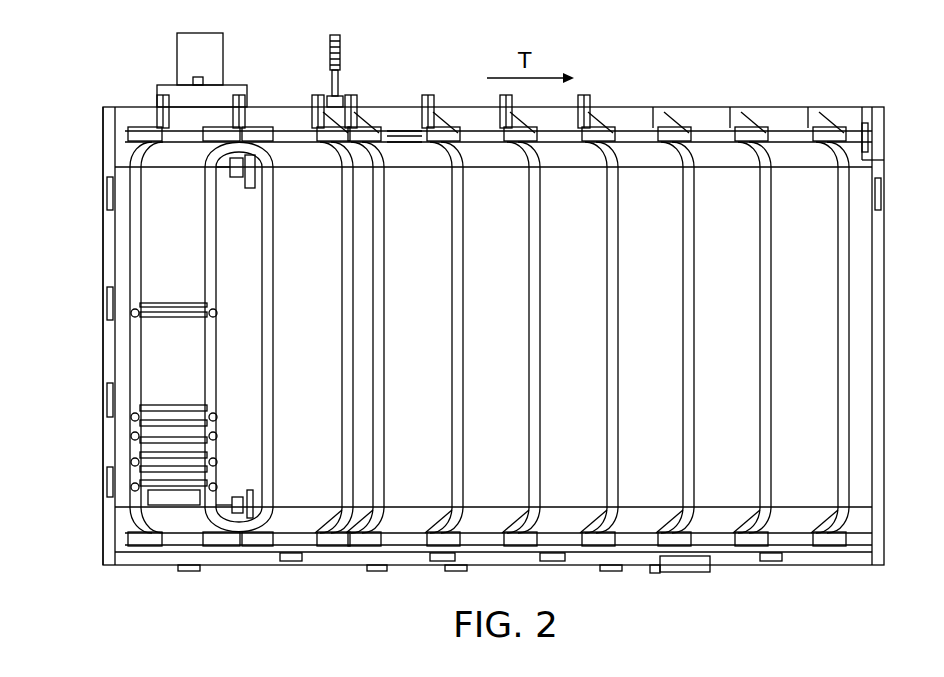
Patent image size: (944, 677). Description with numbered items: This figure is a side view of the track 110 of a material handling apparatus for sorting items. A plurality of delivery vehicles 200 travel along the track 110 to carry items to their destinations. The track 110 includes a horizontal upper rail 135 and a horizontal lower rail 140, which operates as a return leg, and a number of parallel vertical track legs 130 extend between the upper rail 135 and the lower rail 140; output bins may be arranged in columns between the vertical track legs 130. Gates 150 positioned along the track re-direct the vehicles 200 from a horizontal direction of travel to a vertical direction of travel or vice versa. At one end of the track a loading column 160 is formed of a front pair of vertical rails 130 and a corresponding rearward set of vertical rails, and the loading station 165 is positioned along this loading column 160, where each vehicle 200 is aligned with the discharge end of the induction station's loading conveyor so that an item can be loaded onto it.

The track 110 is at (478, 131).
The vertical track legs 130 is at (463, 302).
The horizontal upper rail 135 is at (713, 128).
The horizontal lower rail 140 is at (730, 555).
The gates 150 is at (668, 143).
The loading column 160 is at (108, 197).
The loading station 165 is at (214, 408).
The delivery vehicles 200 is at (140, 305).